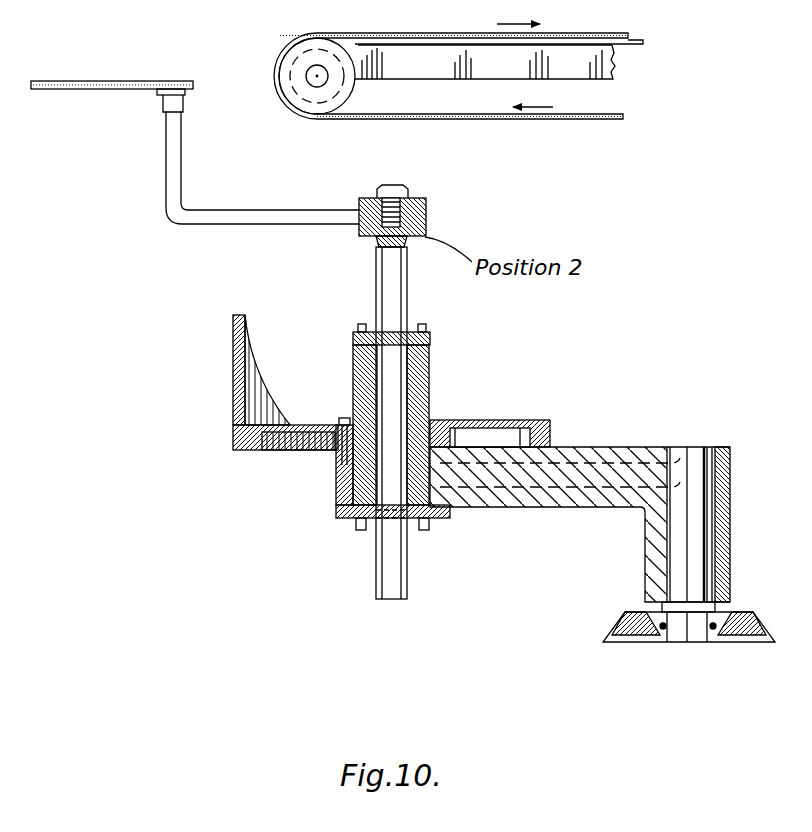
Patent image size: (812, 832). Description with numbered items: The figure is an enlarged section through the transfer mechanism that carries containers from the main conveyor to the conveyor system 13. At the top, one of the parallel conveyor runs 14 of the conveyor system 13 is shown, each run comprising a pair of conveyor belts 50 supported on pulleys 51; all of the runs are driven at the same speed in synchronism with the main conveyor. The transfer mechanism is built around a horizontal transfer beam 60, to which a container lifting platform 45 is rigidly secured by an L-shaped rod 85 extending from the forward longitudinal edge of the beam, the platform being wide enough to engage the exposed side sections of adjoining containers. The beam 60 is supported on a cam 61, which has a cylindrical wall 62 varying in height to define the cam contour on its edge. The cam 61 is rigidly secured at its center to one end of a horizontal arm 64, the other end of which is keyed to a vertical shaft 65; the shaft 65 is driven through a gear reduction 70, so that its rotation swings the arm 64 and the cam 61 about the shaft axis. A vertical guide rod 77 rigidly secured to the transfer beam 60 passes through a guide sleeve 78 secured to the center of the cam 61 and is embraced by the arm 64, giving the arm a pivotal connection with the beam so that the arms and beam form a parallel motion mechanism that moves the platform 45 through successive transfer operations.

The conveyor system 13 is at (633, 126).
The conveyor run 14 is at (292, 52).
The container lifting platform 45 is at (135, 63).
The conveyor belt 50 is at (494, 121).
The pulley 51 is at (337, 107).
The transfer beam 60 is at (427, 222).
The cam 61 is at (236, 435).
The cylindrical wall 62 is at (243, 377).
The horizontal arm 64 is at (588, 494).
The vertical shaft 65 is at (692, 464).
The gear reduction 70 is at (614, 636).
The vertical guide rod 77 is at (409, 587).
The guide sleeve 78 is at (431, 372).
The L-shaped rod 85 is at (204, 219).